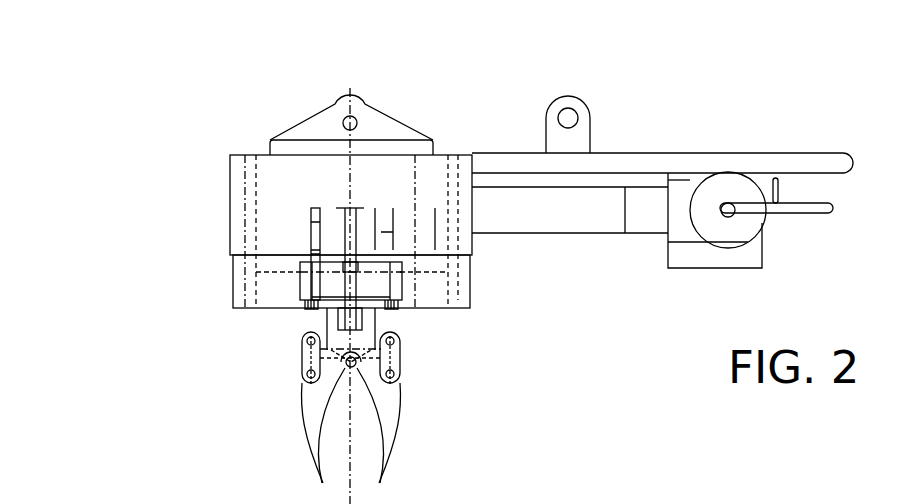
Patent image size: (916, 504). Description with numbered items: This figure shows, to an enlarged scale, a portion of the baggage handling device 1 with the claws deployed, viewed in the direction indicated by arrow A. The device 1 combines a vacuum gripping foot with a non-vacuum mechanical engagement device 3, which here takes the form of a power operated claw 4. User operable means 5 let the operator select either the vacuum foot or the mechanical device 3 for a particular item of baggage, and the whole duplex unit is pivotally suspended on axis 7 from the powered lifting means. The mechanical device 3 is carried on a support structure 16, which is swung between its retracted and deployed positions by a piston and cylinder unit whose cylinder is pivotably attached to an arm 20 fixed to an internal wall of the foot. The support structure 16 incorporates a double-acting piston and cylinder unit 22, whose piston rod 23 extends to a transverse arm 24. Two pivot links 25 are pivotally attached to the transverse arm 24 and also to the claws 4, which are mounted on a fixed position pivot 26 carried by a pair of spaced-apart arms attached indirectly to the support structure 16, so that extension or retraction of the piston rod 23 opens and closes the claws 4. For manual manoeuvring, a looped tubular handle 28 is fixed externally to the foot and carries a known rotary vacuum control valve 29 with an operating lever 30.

The baggage handling device 1 is at (223, 312).
The mechanical engagement device 3 is at (354, 407).
The power operated claw 4 is at (397, 410).
The user operable means 5 is at (583, 108).
The axis 7 is at (356, 118).
The support structure 16 is at (307, 233).
The arm 20 is at (427, 192).
The double-acting piston and cylinder unit 22 is at (335, 210).
The piston rod 23 is at (363, 316).
The transverse arm 24 is at (323, 325).
The pivot links 25 is at (300, 357).
The fixed position pivot 26 is at (366, 376).
The looped tubular handle 28 is at (680, 152).
The rotary vacuum control valve 29 is at (750, 173).
The operating lever 30 is at (817, 215).
The direction A is at (167, 224).